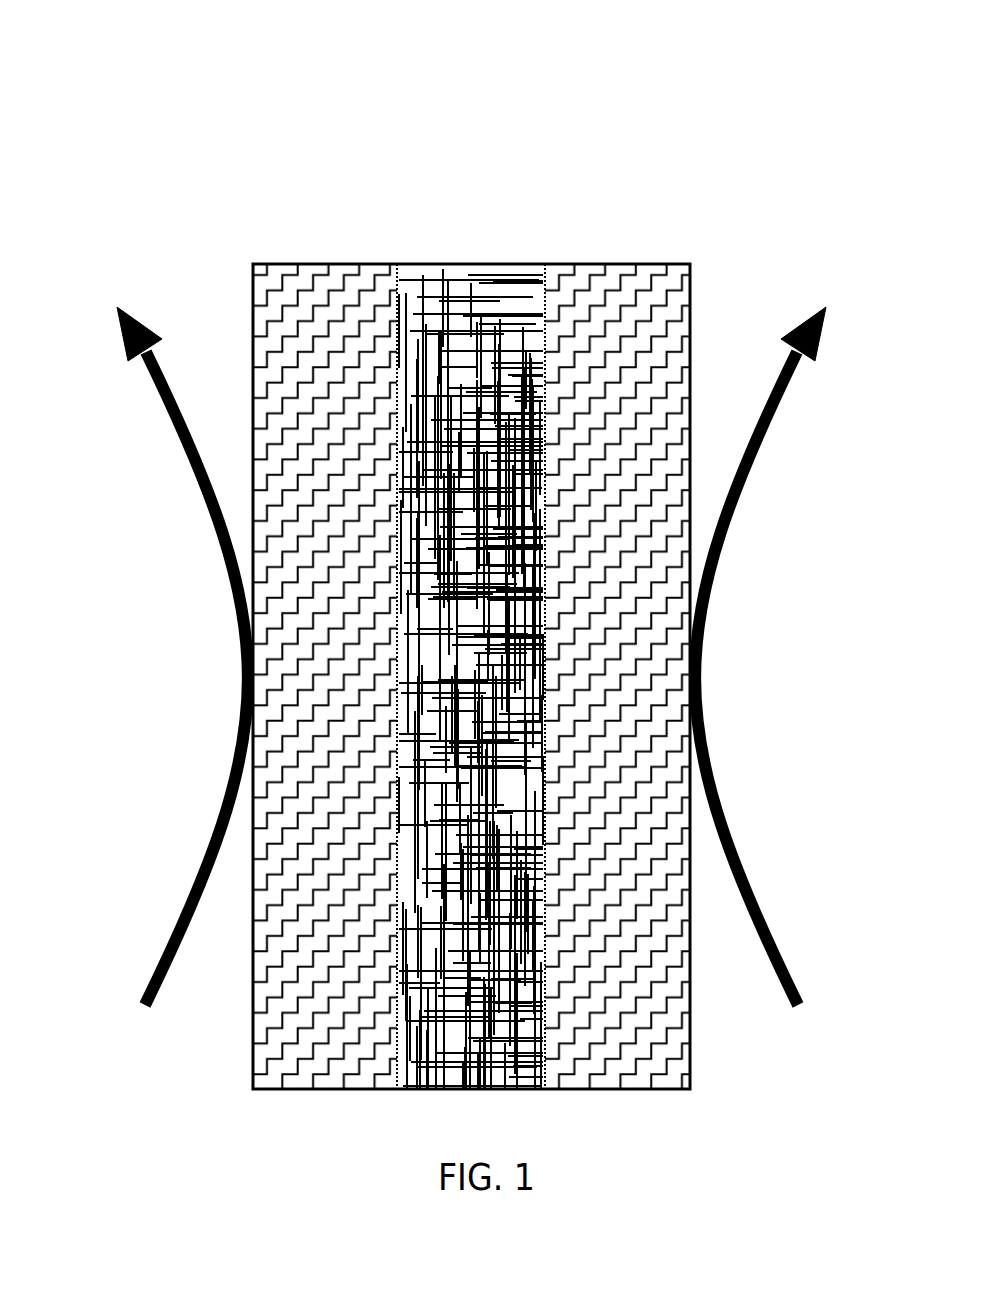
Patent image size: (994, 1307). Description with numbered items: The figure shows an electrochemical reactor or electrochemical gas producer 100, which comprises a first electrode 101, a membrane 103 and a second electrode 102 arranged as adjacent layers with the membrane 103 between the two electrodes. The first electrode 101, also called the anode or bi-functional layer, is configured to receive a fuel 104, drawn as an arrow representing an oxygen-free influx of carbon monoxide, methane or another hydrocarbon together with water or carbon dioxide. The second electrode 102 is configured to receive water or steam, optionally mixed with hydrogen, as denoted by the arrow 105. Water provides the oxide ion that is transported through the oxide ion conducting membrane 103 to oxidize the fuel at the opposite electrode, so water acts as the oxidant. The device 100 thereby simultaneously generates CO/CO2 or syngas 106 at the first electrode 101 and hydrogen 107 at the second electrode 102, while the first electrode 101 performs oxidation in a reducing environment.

The electrochemical gas producer 100 is at (689, 192).
The first electrode 101 is at (312, 305).
The second electrode 102 is at (622, 302).
The membrane 103 is at (455, 308).
The fuel stream 104 is at (157, 704).
The water or steam influx 105 is at (783, 708).
The syngas or CO/CO2 product 106 is at (107, 304).
The hydrogen product 107 is at (838, 312).